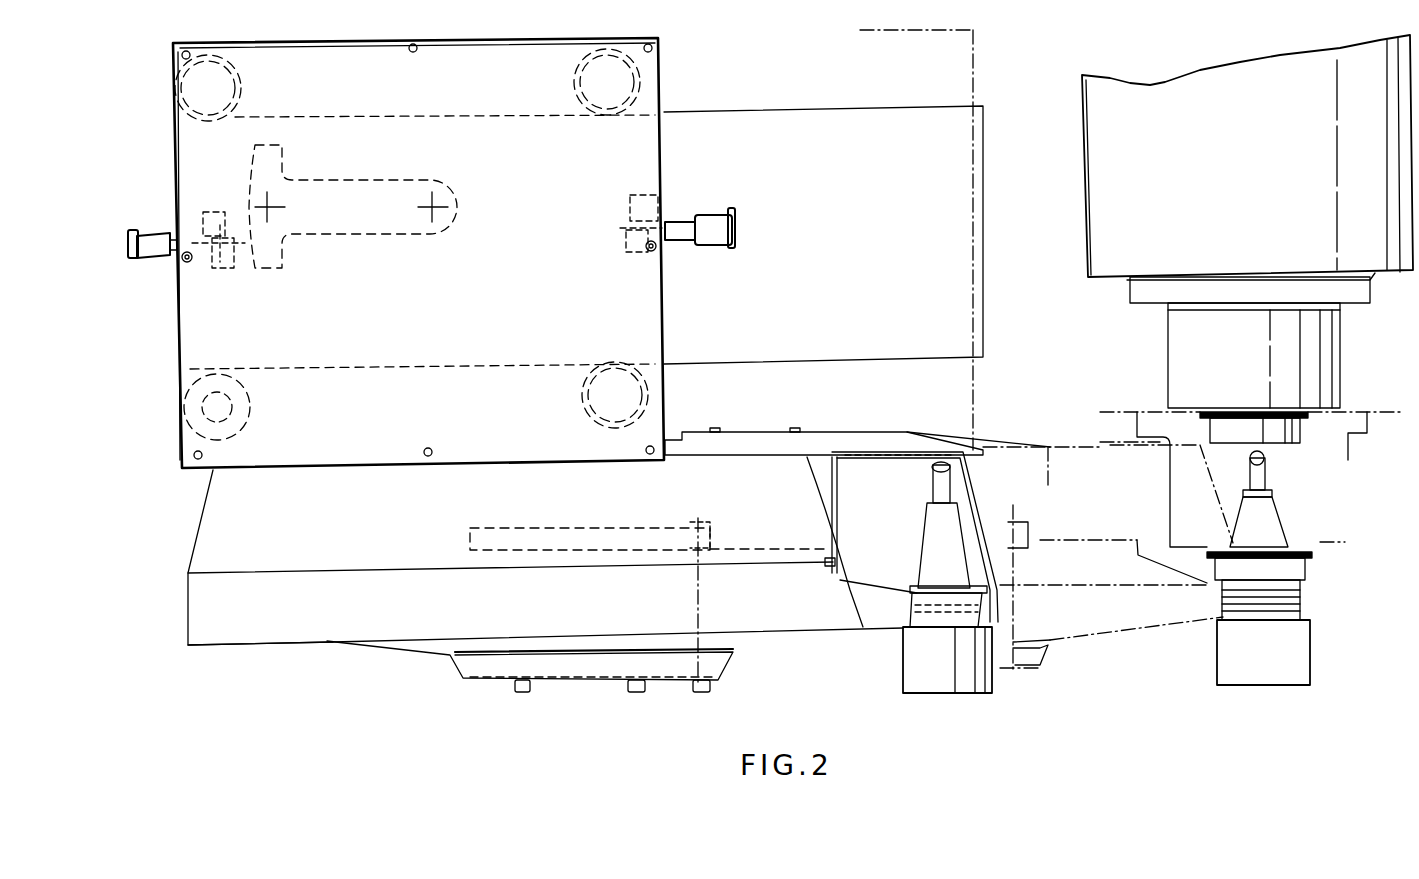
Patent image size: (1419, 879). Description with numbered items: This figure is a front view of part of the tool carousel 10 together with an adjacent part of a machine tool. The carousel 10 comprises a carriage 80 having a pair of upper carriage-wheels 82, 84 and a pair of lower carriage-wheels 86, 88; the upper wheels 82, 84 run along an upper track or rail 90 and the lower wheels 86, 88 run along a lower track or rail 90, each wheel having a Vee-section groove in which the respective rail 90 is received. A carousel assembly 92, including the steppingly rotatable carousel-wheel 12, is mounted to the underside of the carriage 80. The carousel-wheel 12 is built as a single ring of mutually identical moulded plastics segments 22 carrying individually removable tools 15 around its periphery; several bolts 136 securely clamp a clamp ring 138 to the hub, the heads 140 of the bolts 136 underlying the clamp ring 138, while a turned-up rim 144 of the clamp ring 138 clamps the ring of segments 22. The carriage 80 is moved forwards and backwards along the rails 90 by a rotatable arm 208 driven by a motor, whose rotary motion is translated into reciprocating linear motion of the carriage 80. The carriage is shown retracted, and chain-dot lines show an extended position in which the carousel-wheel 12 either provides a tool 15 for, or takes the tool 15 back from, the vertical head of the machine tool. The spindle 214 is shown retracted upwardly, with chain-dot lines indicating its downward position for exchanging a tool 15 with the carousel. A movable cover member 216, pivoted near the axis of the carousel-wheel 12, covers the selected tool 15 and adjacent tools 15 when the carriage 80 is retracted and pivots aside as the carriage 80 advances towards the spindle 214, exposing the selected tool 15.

The tool carousel 10 is at (560, 736).
The carousel-wheel 12 is at (874, 574).
The segments 22 is at (760, 637).
The tools 15 is at (915, 683).
The carriage 80 is at (443, 278).
The upper carriage-wheel 82 is at (222, 88).
The upper carriage-wheel 84 is at (592, 82).
The lower carriage-wheel 86 is at (240, 408).
The lower carriage-wheel 88 is at (600, 403).
The track or rail 90 is at (838, 269).
The carousel assembly 92 is at (375, 526).
The bolts 136 is at (619, 704).
The heads 140 is at (632, 693).
The clamp ring 138 is at (530, 671).
The turned-up rim 144 is at (490, 672).
The arm 208 is at (355, 190).
The spindle 214 is at (1236, 222).
The cover member 216 is at (832, 440).